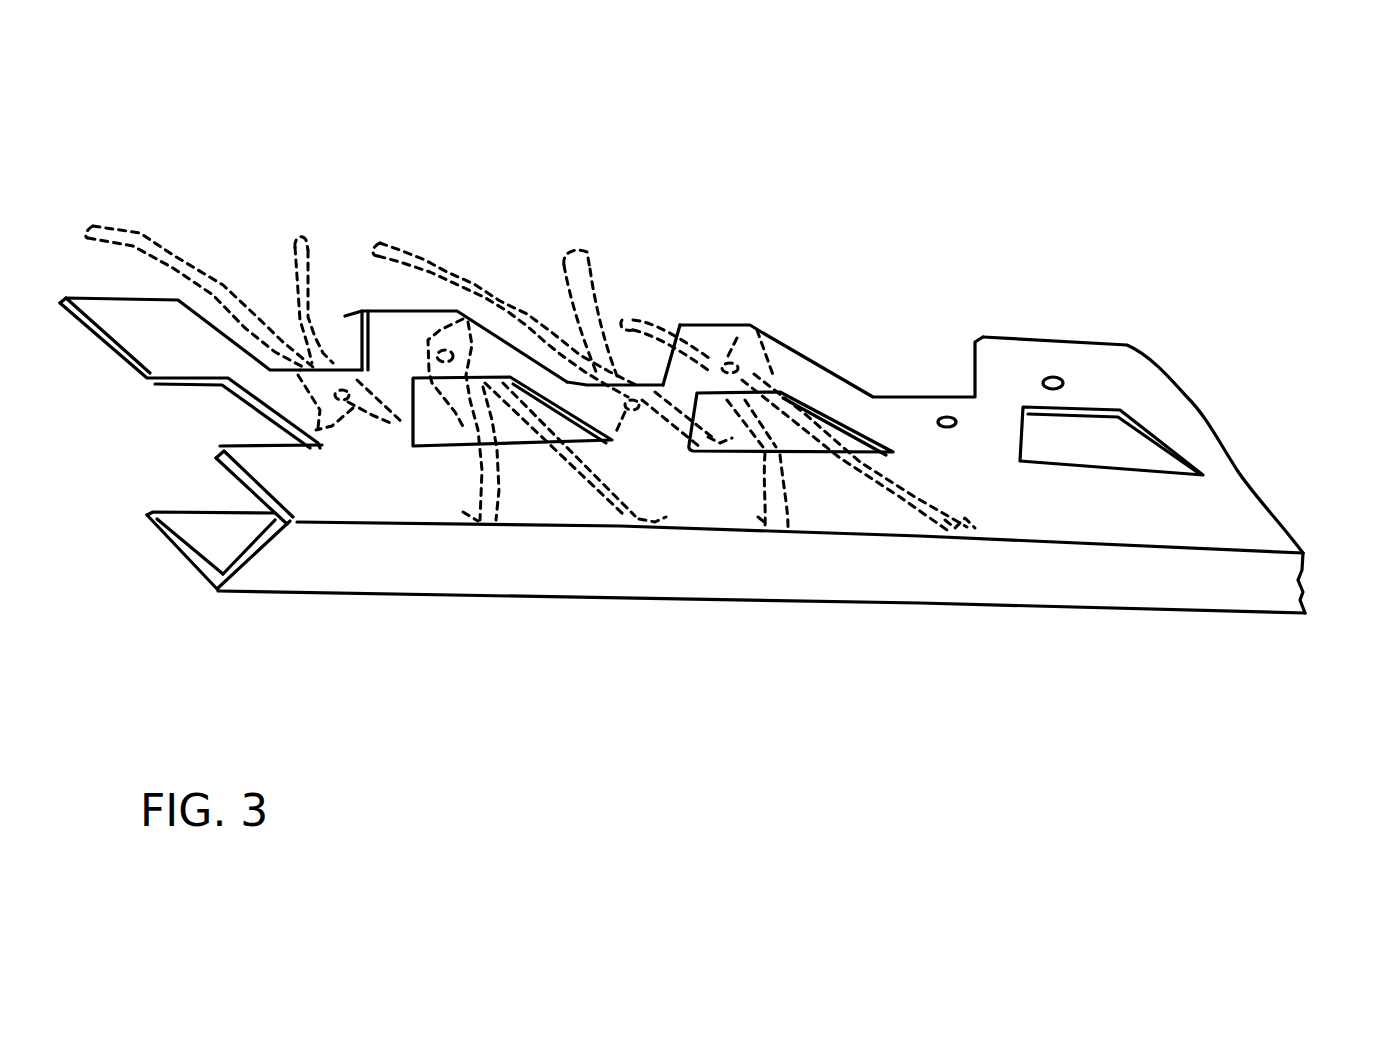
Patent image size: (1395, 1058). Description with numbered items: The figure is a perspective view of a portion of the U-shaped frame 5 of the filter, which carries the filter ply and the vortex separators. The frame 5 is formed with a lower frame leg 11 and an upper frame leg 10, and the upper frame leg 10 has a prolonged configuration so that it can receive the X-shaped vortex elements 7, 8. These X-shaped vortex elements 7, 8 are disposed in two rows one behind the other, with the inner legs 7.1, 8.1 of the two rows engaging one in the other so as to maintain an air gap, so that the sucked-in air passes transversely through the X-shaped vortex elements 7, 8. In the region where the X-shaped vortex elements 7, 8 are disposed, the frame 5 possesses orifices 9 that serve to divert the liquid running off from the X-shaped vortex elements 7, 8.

The U-shaped frame 5 is at (1080, 575).
The X-shaped vortex element 7 is at (621, 510).
The inner leg 7.1 is at (345, 316).
The X-shaped vortex element 8 is at (560, 257).
The inner leg 8.1 is at (395, 415).
The orifice 9 is at (1107, 440).
The upper frame leg 10 is at (155, 386).
The lower frame leg 11 is at (190, 557).